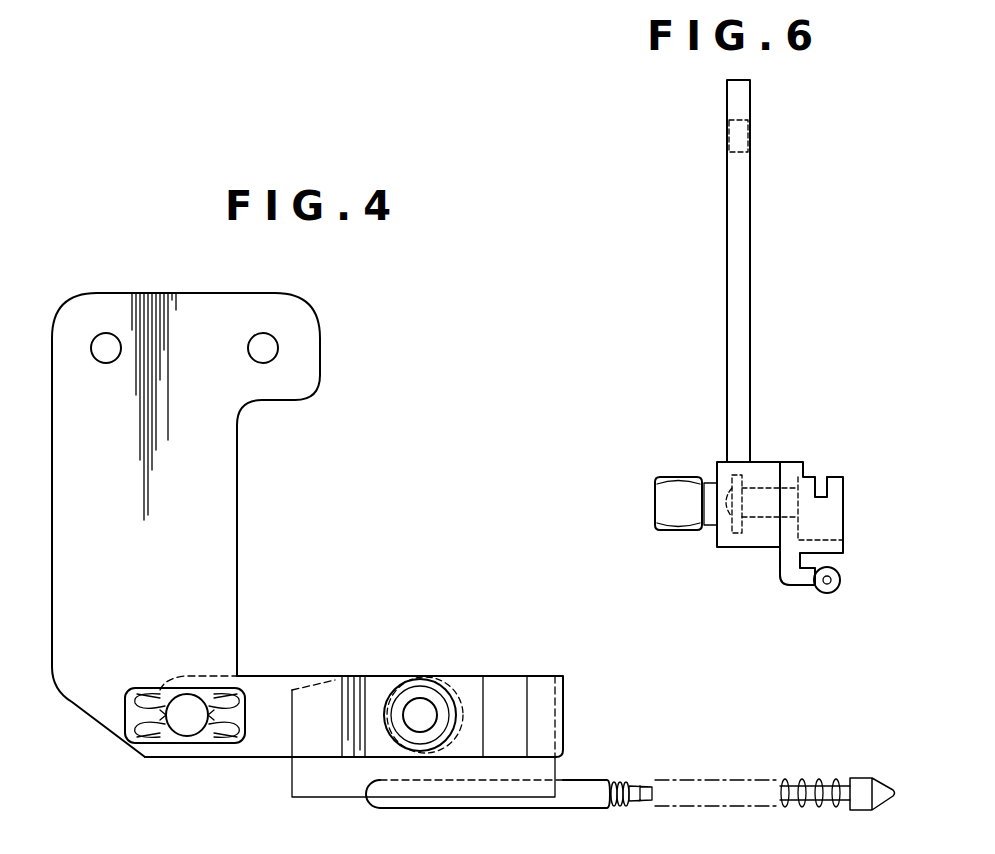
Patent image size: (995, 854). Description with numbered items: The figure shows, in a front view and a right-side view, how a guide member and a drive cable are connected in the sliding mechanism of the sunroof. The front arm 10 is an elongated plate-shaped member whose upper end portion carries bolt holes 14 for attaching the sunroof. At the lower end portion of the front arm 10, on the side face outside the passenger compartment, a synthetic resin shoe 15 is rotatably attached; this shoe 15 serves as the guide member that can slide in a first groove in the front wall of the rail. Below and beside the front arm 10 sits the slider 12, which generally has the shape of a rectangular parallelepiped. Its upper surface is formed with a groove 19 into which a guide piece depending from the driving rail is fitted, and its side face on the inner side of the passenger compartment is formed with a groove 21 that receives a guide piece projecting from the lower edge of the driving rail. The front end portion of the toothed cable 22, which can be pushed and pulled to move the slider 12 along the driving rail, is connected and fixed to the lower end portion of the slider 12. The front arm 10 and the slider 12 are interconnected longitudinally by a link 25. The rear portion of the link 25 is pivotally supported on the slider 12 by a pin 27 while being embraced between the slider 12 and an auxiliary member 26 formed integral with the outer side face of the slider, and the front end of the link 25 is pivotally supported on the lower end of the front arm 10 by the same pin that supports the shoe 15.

In FIG. 4, the front arm 10 is at (244, 536).
In FIG. 6, the front arm 10 is at (757, 333).
In FIG. 4, the slider 12 is at (550, 676).
In FIG. 6, the slider 12 is at (850, 510).
In FIG. 4, the bolt holes 14 is at (108, 338).
In FIG. 6, the bolt holes 14 is at (750, 140).
In FIG. 4, the synthetic resin shoe 15 is at (145, 757).
In FIG. 6, the synthetic resin shoe 15 is at (655, 502).
In FIG. 6, the groove 19 is at (822, 477).
In FIG. 6, the groove 21 is at (800, 583).
In FIG. 4, the toothed cable 22 is at (815, 780).
In FIG. 6, the toothed cable 22 is at (832, 593).
In FIG. 4, the link 25 is at (335, 678).
In FIG. 4, the auxiliary member 26 is at (390, 683).
In FIG. 6, the auxiliary member 26 is at (765, 460).
In FIG. 4, the pin 27 is at (425, 712).
In FIG. 6, the pin 27 is at (748, 526).